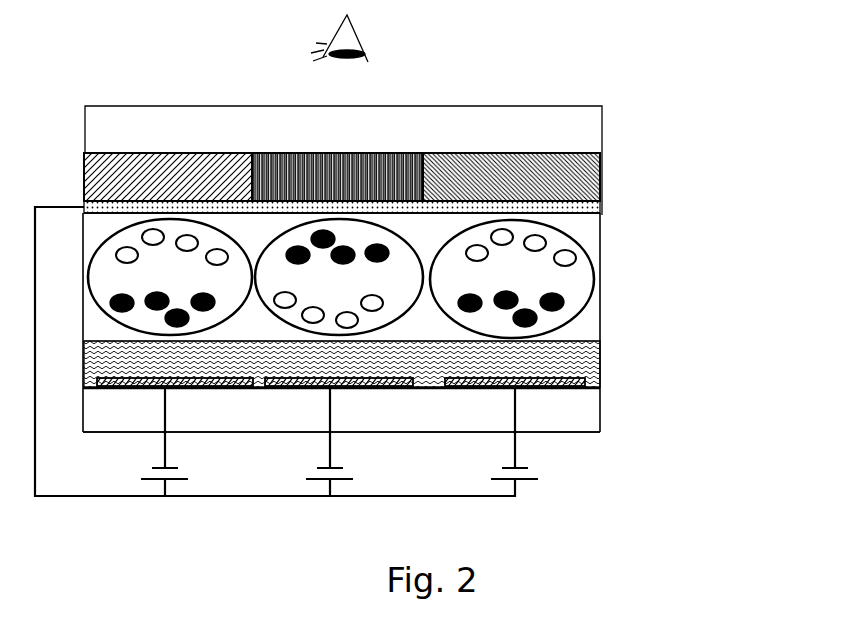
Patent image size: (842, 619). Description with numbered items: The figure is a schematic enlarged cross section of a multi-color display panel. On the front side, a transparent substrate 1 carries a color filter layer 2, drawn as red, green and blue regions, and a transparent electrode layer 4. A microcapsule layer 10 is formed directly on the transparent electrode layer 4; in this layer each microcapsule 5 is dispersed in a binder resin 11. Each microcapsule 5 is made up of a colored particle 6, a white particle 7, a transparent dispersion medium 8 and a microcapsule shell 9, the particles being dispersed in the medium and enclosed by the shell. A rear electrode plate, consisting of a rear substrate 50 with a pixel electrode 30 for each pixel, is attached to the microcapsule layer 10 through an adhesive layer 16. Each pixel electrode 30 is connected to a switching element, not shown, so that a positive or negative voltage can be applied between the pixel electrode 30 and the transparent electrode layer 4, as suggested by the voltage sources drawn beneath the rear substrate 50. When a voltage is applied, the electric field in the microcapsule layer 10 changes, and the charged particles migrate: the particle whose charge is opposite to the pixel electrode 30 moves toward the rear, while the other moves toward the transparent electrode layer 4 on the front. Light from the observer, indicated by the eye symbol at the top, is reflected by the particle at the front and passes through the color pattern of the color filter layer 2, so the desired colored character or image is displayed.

The transparent substrate 1 is at (543, 132).
The color filter layer 2 is at (218, 173).
The transparent electrode layer 4 is at (543, 208).
The microcapsule 5 is at (428, 282).
The colored particle 6 is at (535, 318).
The white particle 7 is at (560, 258).
The transparent dispersion medium 8 is at (552, 280).
The microcapsule shell 9 is at (582, 295).
The microcapsule layer 10 is at (457, 340).
The binder resin 11 is at (587, 230).
The adhesive layer 16 is at (563, 365).
The pixel electrode 30 is at (302, 392).
The rear substrate 50 is at (475, 422).